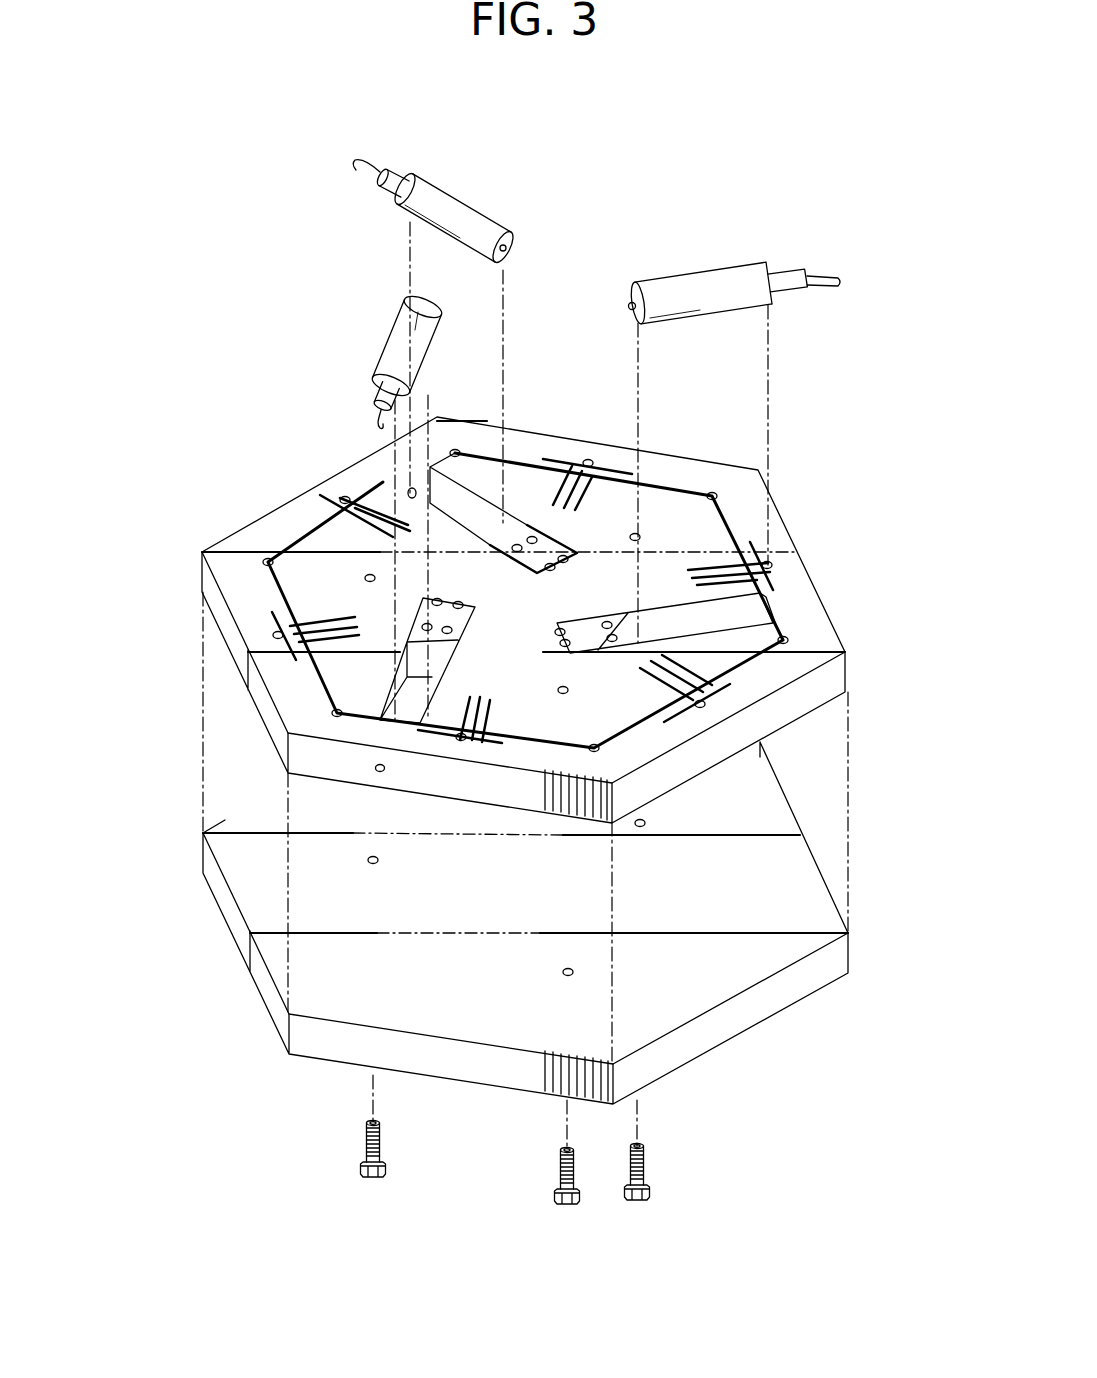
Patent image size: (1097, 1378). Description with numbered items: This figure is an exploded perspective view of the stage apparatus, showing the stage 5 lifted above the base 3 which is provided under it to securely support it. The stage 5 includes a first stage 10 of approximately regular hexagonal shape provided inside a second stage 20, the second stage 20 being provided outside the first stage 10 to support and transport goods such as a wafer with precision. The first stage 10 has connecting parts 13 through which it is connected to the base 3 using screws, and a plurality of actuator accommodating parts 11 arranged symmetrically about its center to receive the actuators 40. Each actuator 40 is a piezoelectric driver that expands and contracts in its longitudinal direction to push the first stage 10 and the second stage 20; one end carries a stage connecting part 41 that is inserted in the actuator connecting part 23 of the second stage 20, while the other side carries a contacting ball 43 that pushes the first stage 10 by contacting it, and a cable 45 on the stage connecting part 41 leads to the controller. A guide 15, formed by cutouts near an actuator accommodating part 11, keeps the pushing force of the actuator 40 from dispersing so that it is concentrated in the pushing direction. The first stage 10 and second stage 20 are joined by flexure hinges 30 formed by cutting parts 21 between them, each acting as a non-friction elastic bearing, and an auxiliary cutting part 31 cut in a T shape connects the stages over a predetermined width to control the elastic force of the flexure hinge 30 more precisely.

The base 3 is at (740, 1013).
The stage 5 is at (504, 620).
The first stage 10 is at (703, 513).
The actuator accommodating part 11 is at (380, 692).
The connecting part 13 is at (366, 578).
The guide 15 is at (537, 521).
The second stage 20 is at (493, 651).
The cutting part 21 is at (677, 484).
The actuator connecting part 23 is at (378, 768).
The flexure hinge 30 is at (351, 506).
The auxiliary cutting part 31 is at (277, 634).
The actuator 40 is at (580, 289).
The stage connecting part 41 is at (790, 282).
The contacting ball 43 is at (634, 298).
The cable 45 is at (823, 282).